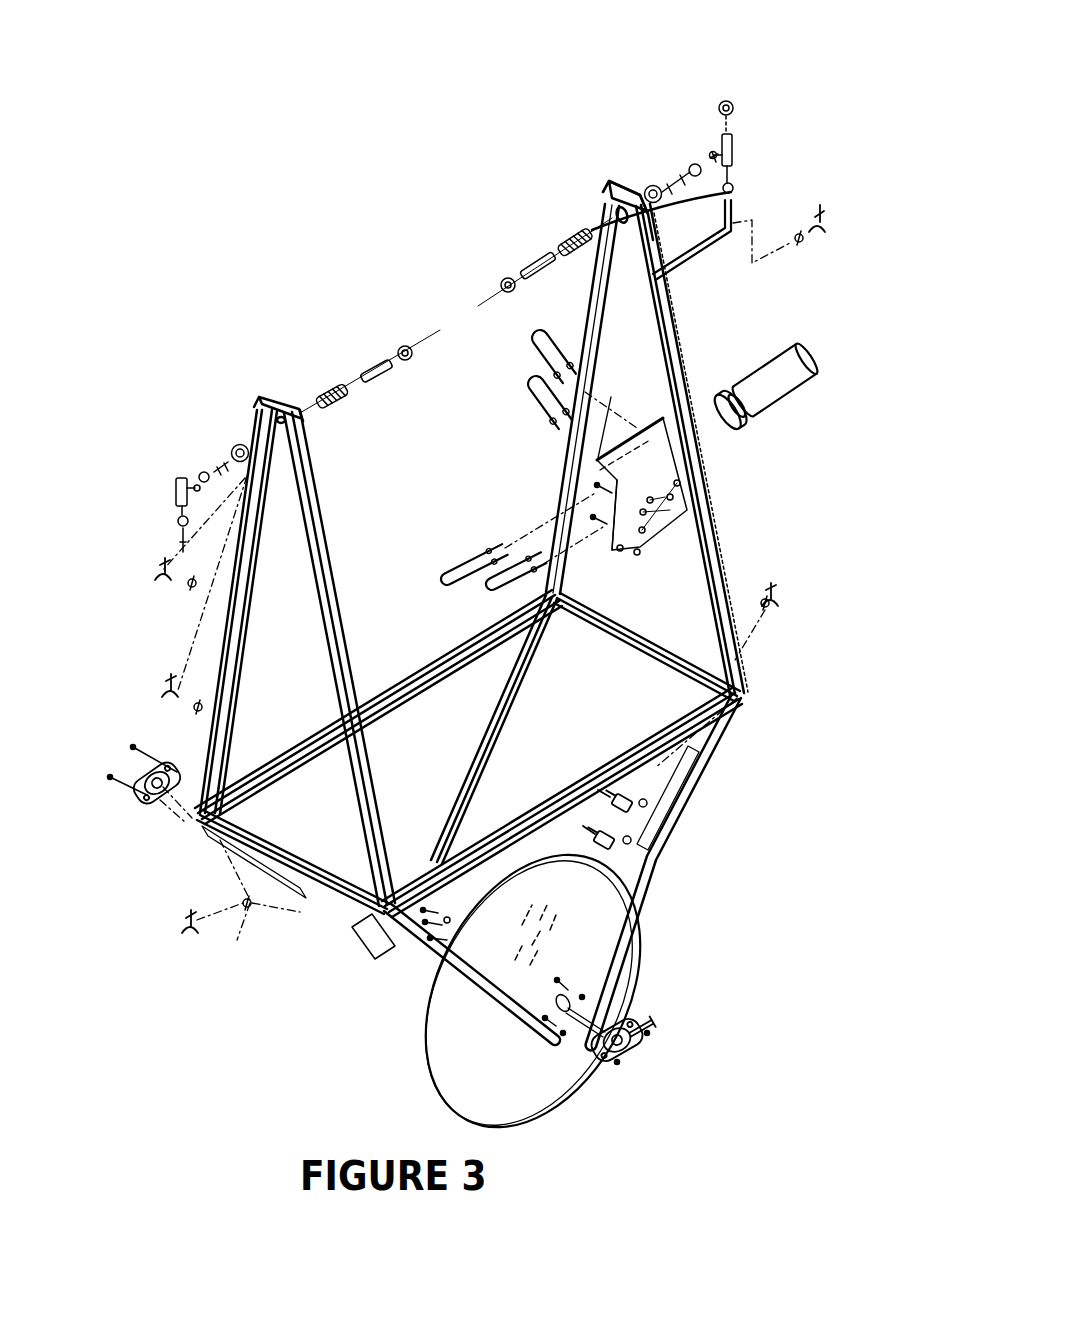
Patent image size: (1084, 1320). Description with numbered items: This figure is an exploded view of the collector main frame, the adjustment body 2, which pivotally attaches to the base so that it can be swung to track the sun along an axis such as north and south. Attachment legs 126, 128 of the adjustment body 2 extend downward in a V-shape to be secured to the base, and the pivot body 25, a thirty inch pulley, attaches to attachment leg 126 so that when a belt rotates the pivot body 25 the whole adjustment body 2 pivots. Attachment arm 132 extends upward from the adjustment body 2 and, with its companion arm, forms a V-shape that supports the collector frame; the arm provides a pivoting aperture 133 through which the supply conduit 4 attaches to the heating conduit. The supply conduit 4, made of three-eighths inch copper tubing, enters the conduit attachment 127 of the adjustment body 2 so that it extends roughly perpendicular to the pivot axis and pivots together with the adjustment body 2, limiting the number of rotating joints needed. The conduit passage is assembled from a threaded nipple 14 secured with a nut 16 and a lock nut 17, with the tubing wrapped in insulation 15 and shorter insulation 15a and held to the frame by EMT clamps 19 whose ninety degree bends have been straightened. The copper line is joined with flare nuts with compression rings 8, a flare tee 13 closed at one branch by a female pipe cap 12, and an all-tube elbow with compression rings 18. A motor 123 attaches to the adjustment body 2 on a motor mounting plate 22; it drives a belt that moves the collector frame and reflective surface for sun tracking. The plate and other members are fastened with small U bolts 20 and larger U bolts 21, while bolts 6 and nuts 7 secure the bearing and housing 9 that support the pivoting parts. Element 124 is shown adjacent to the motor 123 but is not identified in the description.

The adjustment body 2 is at (435, 648).
The supply conduit 4 is at (664, 178).
The bolt 6 is at (378, 950).
The nut 7 is at (648, 454).
The flare nut with compression ring 8 is at (690, 163).
The bearing and housing 9 is at (152, 799).
The female pipe cap 12 is at (722, 99).
The flare tee 13 is at (720, 140).
The threaded nipple 14 is at (320, 394).
The insulation 15 is at (358, 372).
The insulation 15a is at (808, 248).
The nut 16 is at (646, 186).
The lock nut 17 is at (398, 345).
The all-tube elbow with compression rings 18 is at (178, 475).
The EMT clamp with screw 19 is at (822, 236).
The U bolt 20 is at (510, 558).
The U bolt 21 is at (527, 360).
The motor mounting plate 22 is at (661, 410).
The pivot body 25 is at (428, 1050).
The motor 123 is at (802, 396).
The flange 124 is at (732, 428).
The attachment leg 126 is at (732, 738).
The conduit attachment 127 is at (570, 1042).
The attachment leg 128 is at (500, 718).
The attachment arm 132 is at (606, 186).
The pivoting aperture 133 is at (731, 192).